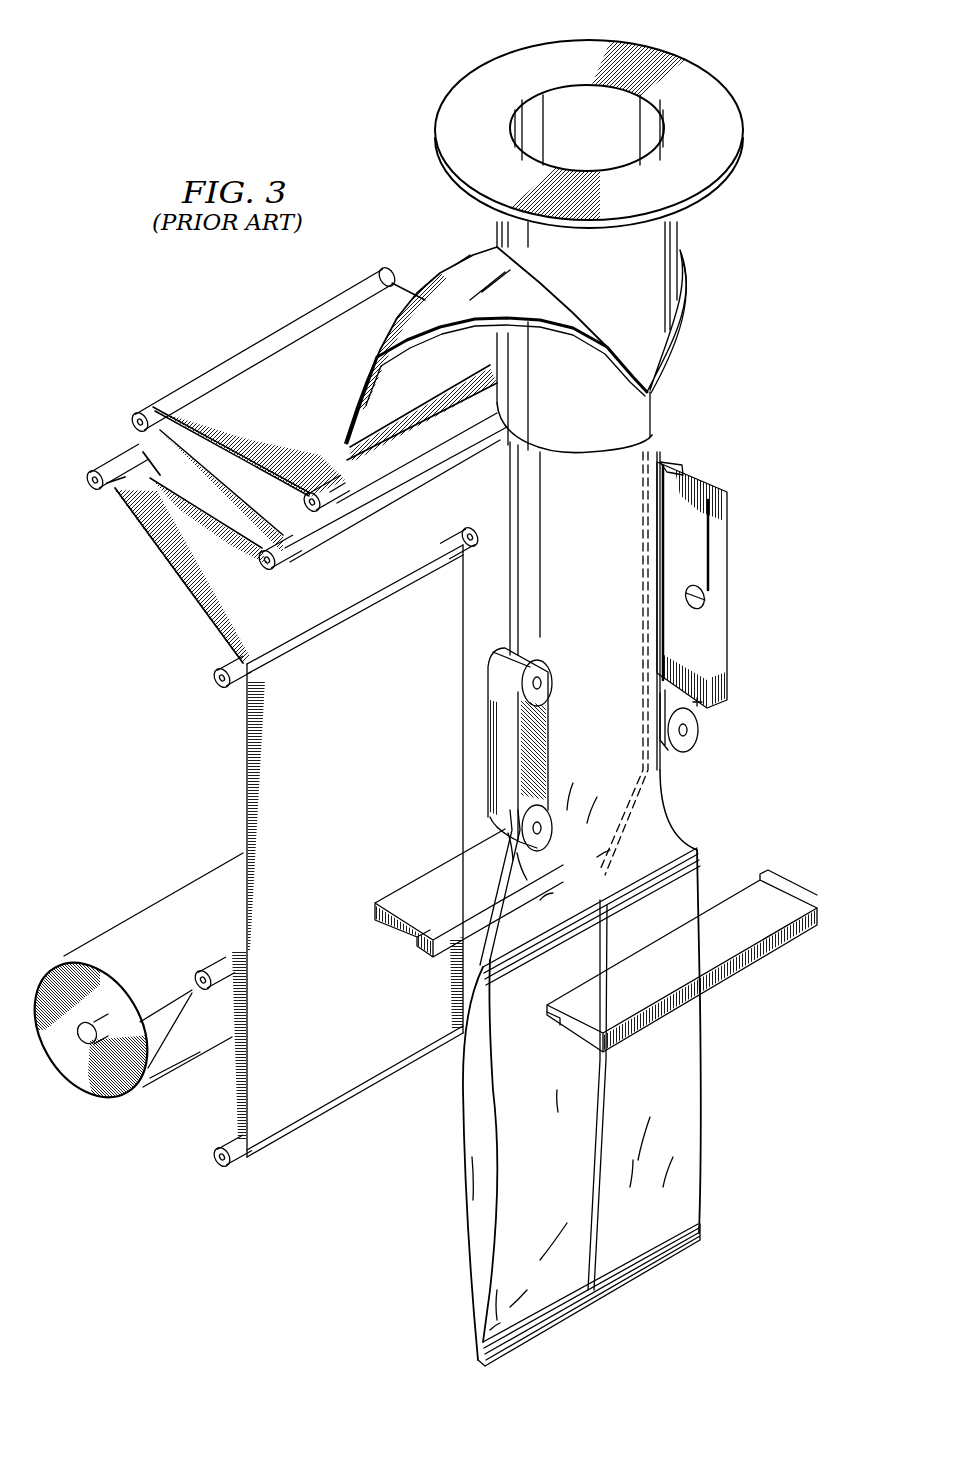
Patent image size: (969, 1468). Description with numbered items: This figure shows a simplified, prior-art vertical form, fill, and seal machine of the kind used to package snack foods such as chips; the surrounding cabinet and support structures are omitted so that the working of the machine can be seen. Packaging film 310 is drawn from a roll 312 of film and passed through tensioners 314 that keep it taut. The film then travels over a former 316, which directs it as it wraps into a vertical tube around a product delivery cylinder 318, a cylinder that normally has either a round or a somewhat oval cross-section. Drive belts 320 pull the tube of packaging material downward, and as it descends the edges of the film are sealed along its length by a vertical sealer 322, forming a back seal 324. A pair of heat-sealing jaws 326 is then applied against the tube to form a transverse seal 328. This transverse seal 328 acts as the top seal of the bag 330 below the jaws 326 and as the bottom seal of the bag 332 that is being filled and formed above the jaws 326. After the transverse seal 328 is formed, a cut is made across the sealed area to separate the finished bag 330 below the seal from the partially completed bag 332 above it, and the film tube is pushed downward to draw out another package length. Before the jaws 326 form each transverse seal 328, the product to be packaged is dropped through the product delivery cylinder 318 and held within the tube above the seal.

The packaging film 310 is at (290, 1118).
The roll 312 is at (80, 1078).
The tensioners 314 is at (134, 423).
The former 316 is at (358, 398).
The product delivery cylinder 318 is at (652, 241).
The drive belts 320 is at (500, 718).
The vertical sealer 322 is at (695, 473).
The back seal 324 is at (610, 1092).
The heat-sealing jaws 326 is at (424, 888).
The transverse seal 328 is at (696, 848).
The bag 330 is at (465, 1217).
The bag 332 is at (668, 818).